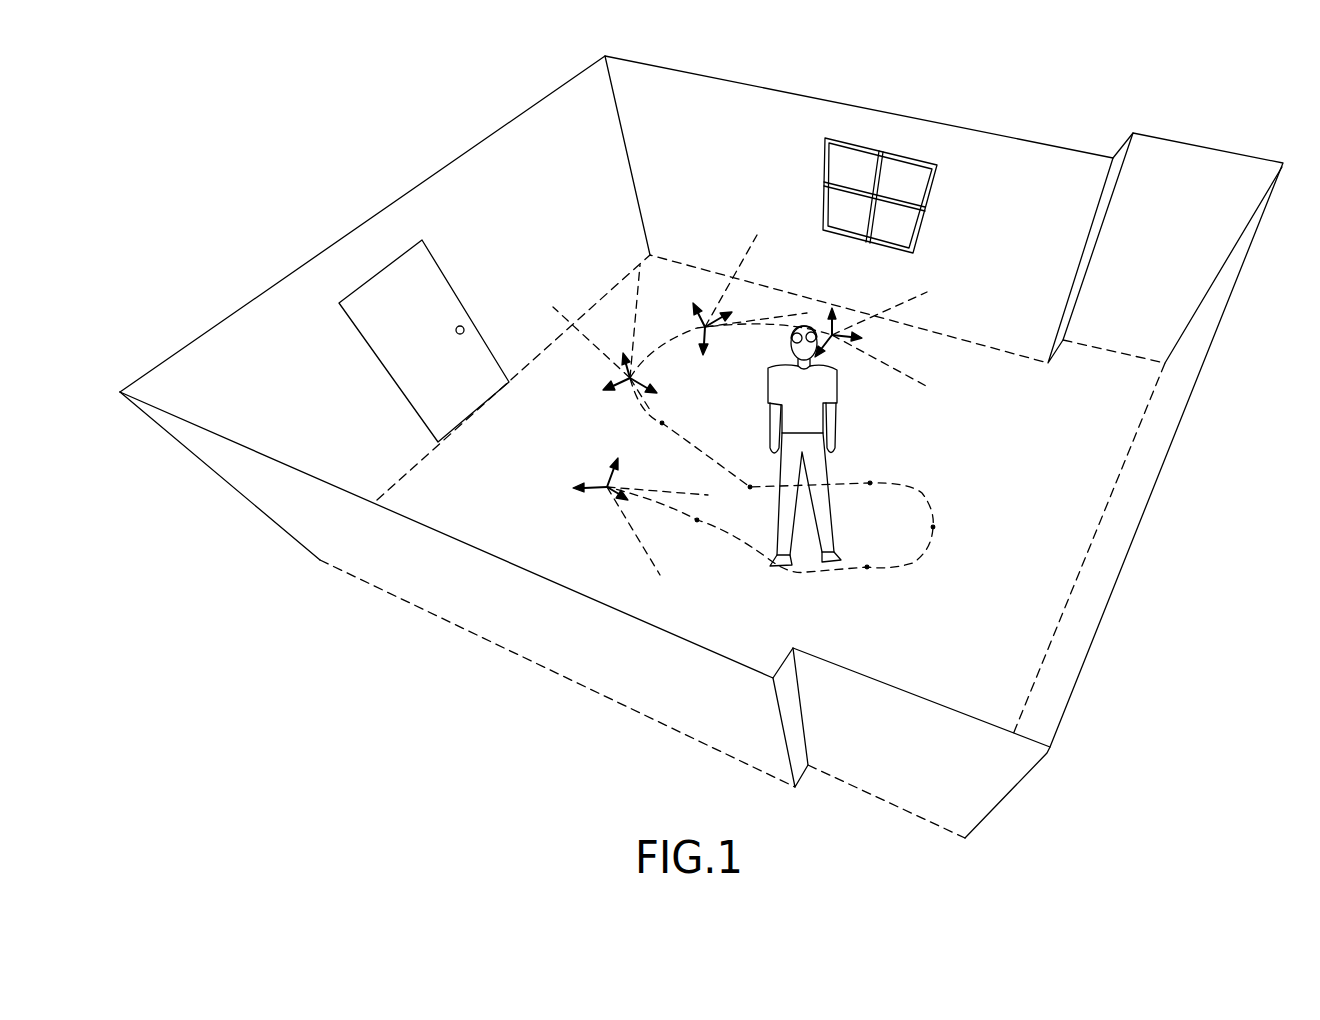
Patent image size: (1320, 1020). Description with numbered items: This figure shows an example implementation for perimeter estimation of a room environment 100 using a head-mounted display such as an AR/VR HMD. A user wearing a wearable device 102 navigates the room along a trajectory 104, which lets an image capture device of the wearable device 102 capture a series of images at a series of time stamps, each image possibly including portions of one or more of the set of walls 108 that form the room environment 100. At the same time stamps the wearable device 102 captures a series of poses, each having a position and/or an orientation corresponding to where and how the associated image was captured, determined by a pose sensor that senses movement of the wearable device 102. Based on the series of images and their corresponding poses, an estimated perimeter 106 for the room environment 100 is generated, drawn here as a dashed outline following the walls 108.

The room environment 100 is at (701, 443).
The wearable device 102 is at (790, 338).
The trajectory 104 is at (908, 487).
The estimated perimeter 106 is at (440, 615).
The walls 108 is at (595, 92).